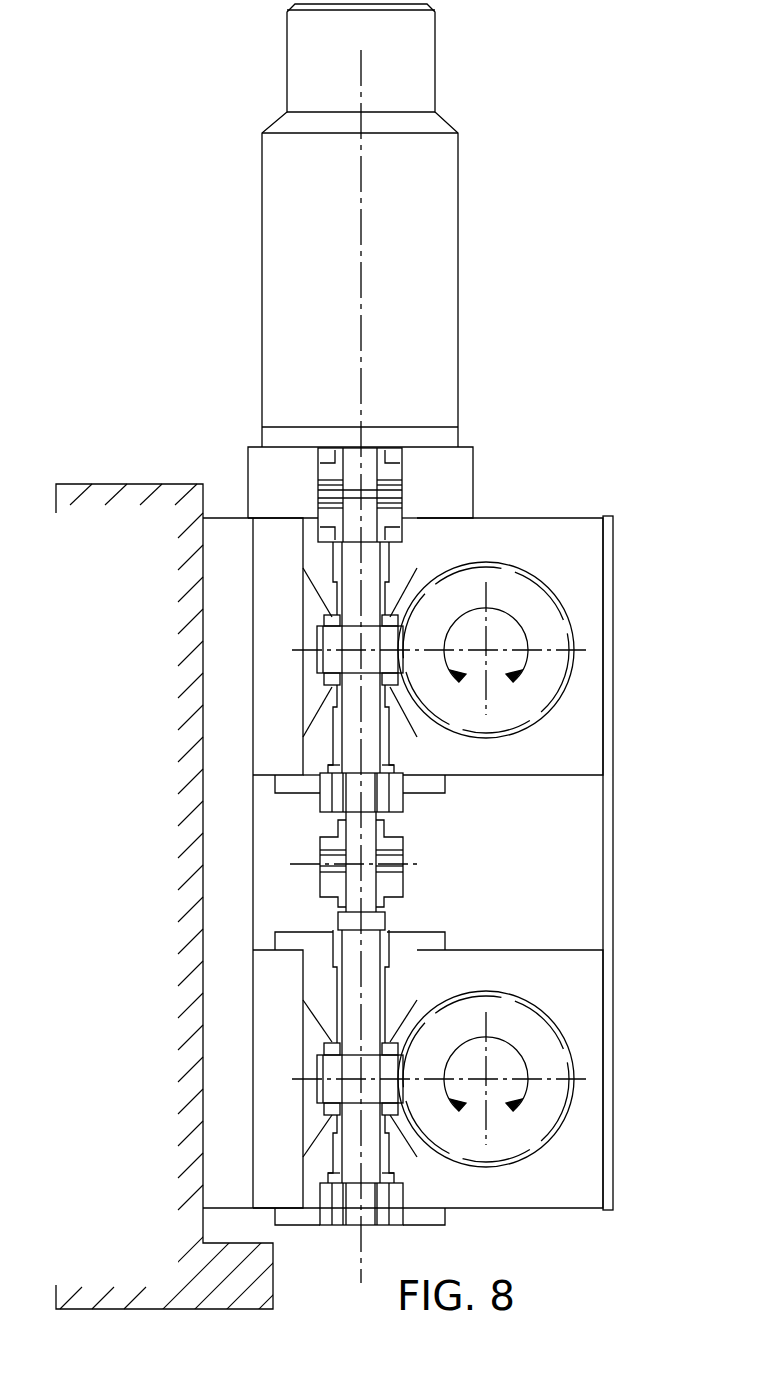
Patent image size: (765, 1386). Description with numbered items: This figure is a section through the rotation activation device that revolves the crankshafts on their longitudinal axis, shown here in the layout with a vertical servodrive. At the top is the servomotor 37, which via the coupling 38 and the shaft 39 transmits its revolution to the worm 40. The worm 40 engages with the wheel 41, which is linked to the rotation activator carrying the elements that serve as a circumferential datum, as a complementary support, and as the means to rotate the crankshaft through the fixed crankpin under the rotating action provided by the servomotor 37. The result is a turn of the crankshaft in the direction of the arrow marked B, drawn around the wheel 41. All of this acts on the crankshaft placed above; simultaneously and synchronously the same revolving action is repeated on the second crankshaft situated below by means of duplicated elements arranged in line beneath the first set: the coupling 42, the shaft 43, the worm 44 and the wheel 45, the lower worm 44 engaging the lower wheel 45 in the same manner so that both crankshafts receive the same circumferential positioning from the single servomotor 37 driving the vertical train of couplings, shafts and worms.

The servomotor 37 is at (422, 228).
The coupling 38 is at (390, 472).
The shaft 39 is at (368, 518).
The worm 40 is at (330, 636).
The wheel 41 is at (527, 600).
The coupling 42 is at (390, 840).
The shaft 43 is at (370, 923).
The worm 44 is at (330, 1068).
The wheel 45 is at (528, 1030).